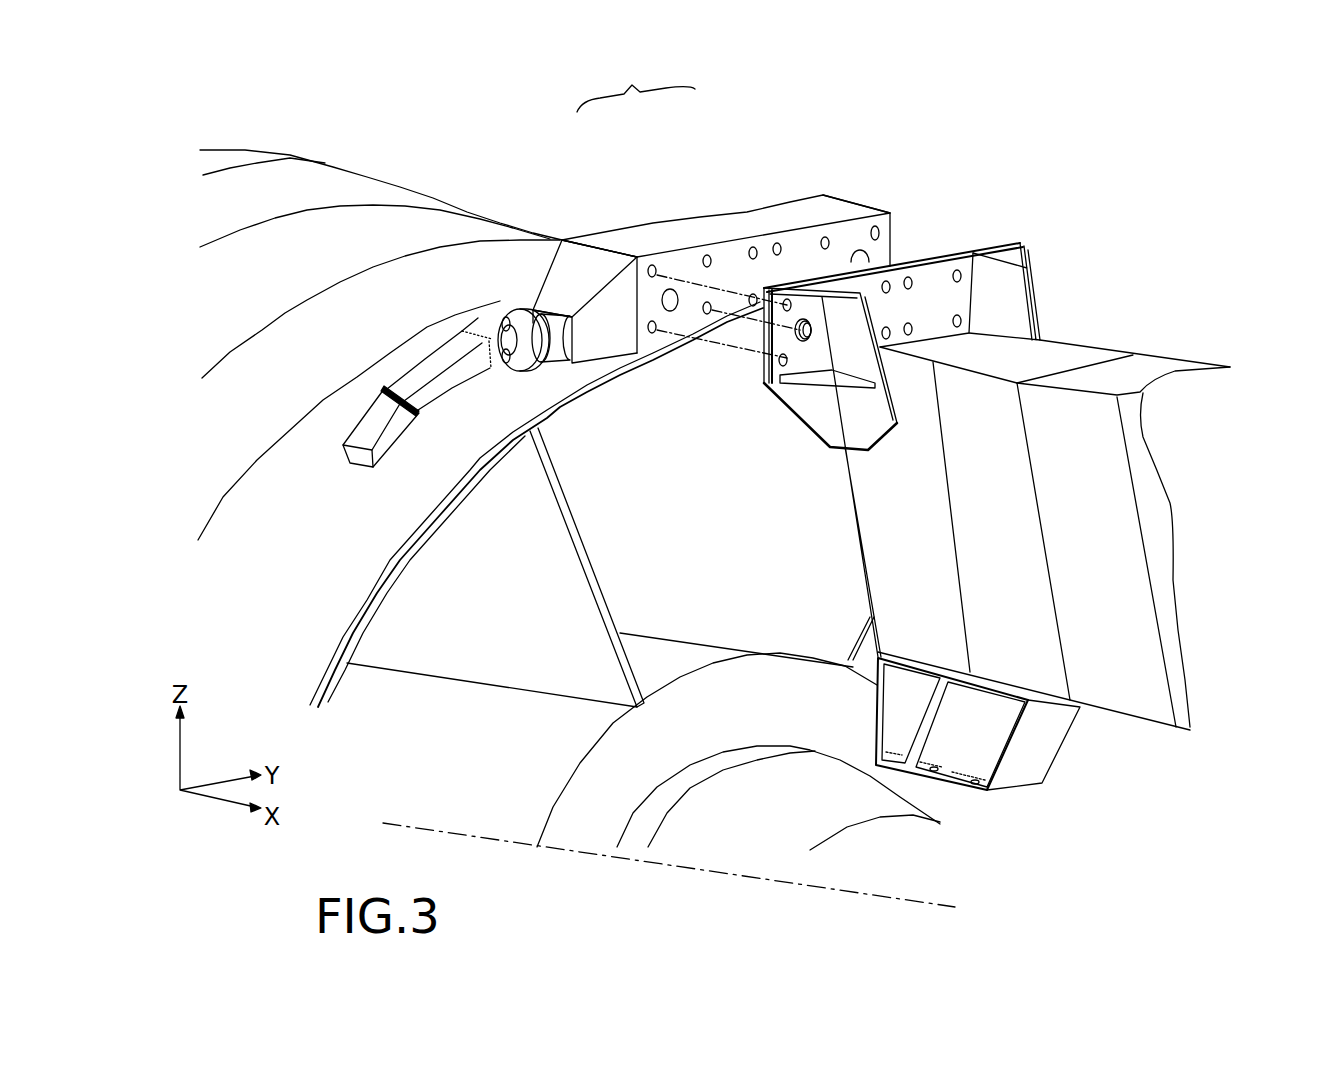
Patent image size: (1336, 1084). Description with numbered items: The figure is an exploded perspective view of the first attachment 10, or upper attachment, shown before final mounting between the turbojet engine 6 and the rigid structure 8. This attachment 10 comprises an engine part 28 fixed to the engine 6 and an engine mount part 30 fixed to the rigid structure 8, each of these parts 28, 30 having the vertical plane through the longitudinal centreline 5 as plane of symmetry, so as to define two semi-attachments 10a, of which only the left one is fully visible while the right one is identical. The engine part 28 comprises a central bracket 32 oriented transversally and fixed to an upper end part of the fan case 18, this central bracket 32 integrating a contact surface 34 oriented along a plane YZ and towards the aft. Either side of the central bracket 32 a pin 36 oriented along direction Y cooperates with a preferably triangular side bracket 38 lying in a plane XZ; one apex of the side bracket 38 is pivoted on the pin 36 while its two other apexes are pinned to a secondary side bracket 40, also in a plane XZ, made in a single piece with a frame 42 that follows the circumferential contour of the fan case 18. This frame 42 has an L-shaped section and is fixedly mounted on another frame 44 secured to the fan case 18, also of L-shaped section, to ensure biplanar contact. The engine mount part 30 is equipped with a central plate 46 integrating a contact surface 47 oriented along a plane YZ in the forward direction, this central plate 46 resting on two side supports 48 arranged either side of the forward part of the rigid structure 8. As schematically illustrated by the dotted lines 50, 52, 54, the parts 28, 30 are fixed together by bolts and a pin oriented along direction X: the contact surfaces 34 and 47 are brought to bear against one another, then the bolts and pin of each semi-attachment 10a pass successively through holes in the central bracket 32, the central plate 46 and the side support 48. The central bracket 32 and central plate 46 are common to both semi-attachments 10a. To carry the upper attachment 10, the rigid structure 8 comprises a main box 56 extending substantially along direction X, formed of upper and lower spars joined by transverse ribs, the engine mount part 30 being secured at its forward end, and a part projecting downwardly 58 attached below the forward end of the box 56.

The longitudinal centreline 5 is at (960, 905).
The turbojet engine 6 is at (196, 441).
The rigid structure 8 is at (1176, 345).
The first attachment 10 is at (636, 85).
The semi-attachment 10a is at (549, 272).
The fan case 18 is at (303, 175).
The engine part 28 is at (711, 270).
The engine mount part 30 is at (1046, 288).
The central bracket 32 is at (620, 242).
The contact surface 34 is at (693, 255).
The pin 36 is at (539, 348).
The side bracket 38 is at (527, 302).
The secondary side bracket 40 is at (490, 370).
The frame 42 is at (432, 408).
The frame 44 is at (384, 449).
The central plate 46 is at (902, 260).
The contact surface 47 is at (931, 257).
The side support 48 is at (875, 408).
The dotted line 50 is at (762, 374).
The dotted line 52 is at (691, 289).
The dotted line 54 is at (720, 312).
The main box 56 is at (1140, 645).
The downwardly projecting part 58 is at (1040, 750).